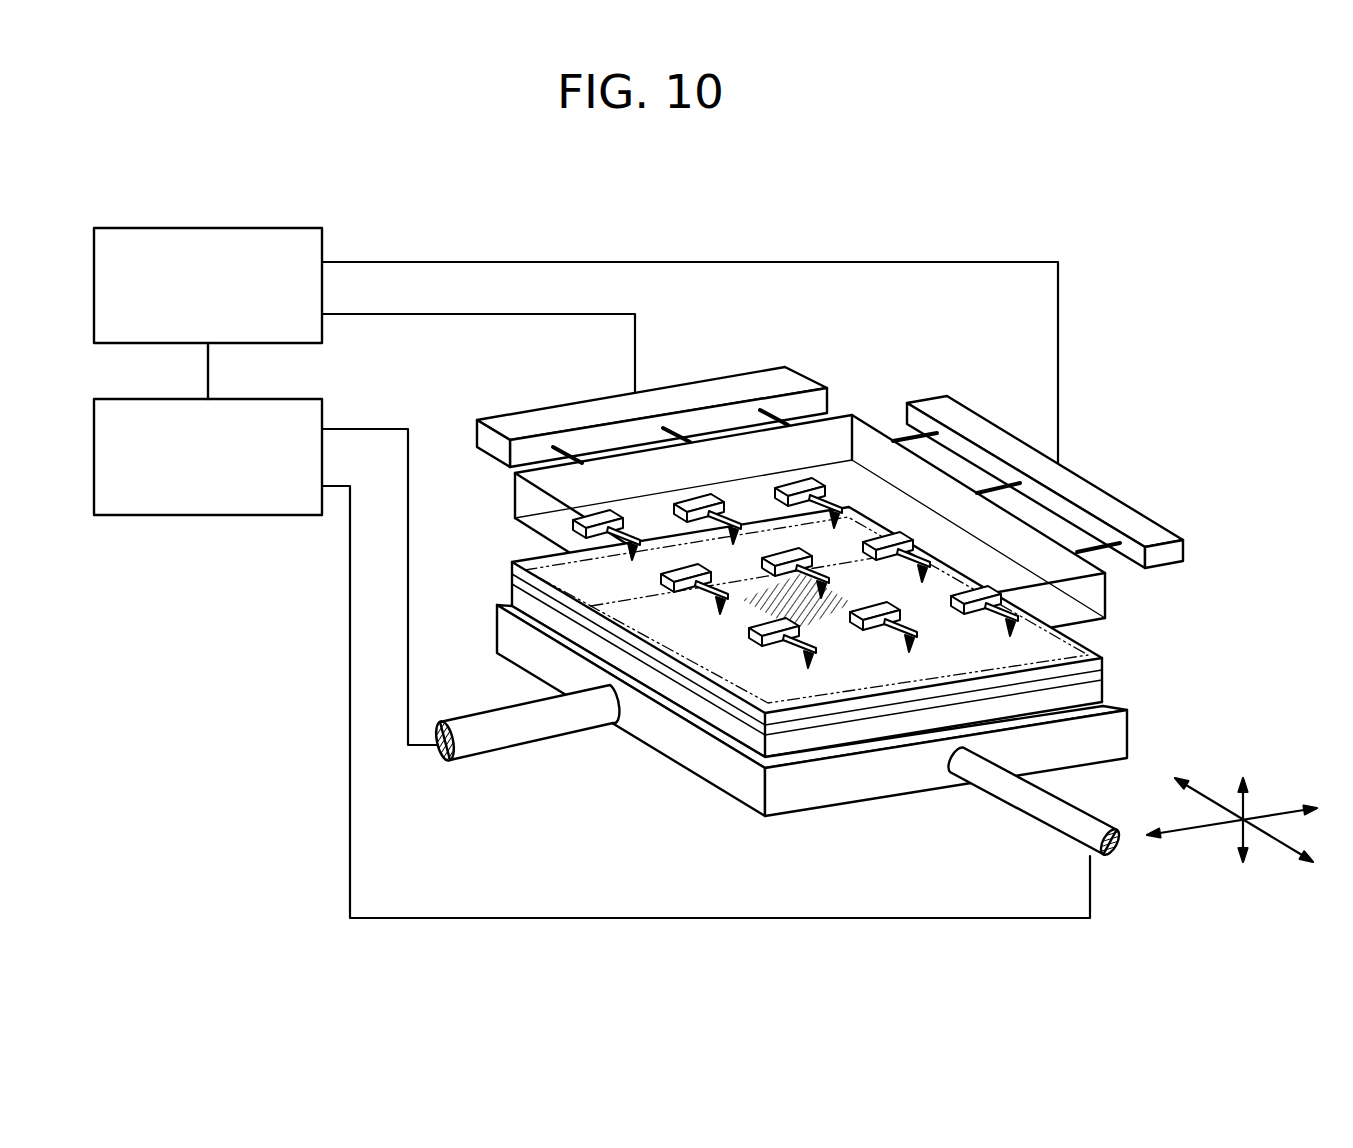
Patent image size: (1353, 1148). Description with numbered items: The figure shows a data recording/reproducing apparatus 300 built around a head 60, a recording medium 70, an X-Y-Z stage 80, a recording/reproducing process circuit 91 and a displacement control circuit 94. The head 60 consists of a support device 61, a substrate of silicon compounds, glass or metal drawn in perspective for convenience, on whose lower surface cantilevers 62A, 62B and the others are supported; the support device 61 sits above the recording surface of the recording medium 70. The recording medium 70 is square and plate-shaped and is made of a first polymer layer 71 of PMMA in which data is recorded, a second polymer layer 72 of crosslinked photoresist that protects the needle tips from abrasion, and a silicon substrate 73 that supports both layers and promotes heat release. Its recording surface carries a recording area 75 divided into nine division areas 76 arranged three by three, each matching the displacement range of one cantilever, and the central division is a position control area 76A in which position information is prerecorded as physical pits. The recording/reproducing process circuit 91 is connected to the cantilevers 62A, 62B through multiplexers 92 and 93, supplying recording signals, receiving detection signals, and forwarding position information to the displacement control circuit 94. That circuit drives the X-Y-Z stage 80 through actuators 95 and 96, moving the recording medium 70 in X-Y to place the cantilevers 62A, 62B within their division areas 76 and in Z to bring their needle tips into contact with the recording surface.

The data recording/reproducing apparatus 300 is at (705, 549).
The head 60 is at (841, 521).
The support device 61 is at (834, 416).
The cantilever 62A is at (608, 527).
The cantilever 62B is at (715, 600).
The recording medium 70 is at (821, 695).
The first polymer layer 71 is at (1103, 665).
The second polymer layer 72 is at (1103, 677).
The silicon substrate 73 is at (1103, 693).
The recording area 75 is at (748, 690).
The division area 76 is at (640, 580).
The position control area 76A is at (843, 578).
The X-Y-Z stage 80 is at (1138, 745).
The recording/reproducing process circuit 91 is at (237, 226).
The multiplexer 92 is at (583, 398).
The multiplexer 93 is at (1093, 484).
The displacement control circuit 94 is at (165, 516).
The actuator 95 is at (518, 747).
The actuator 96 is at (1050, 792).